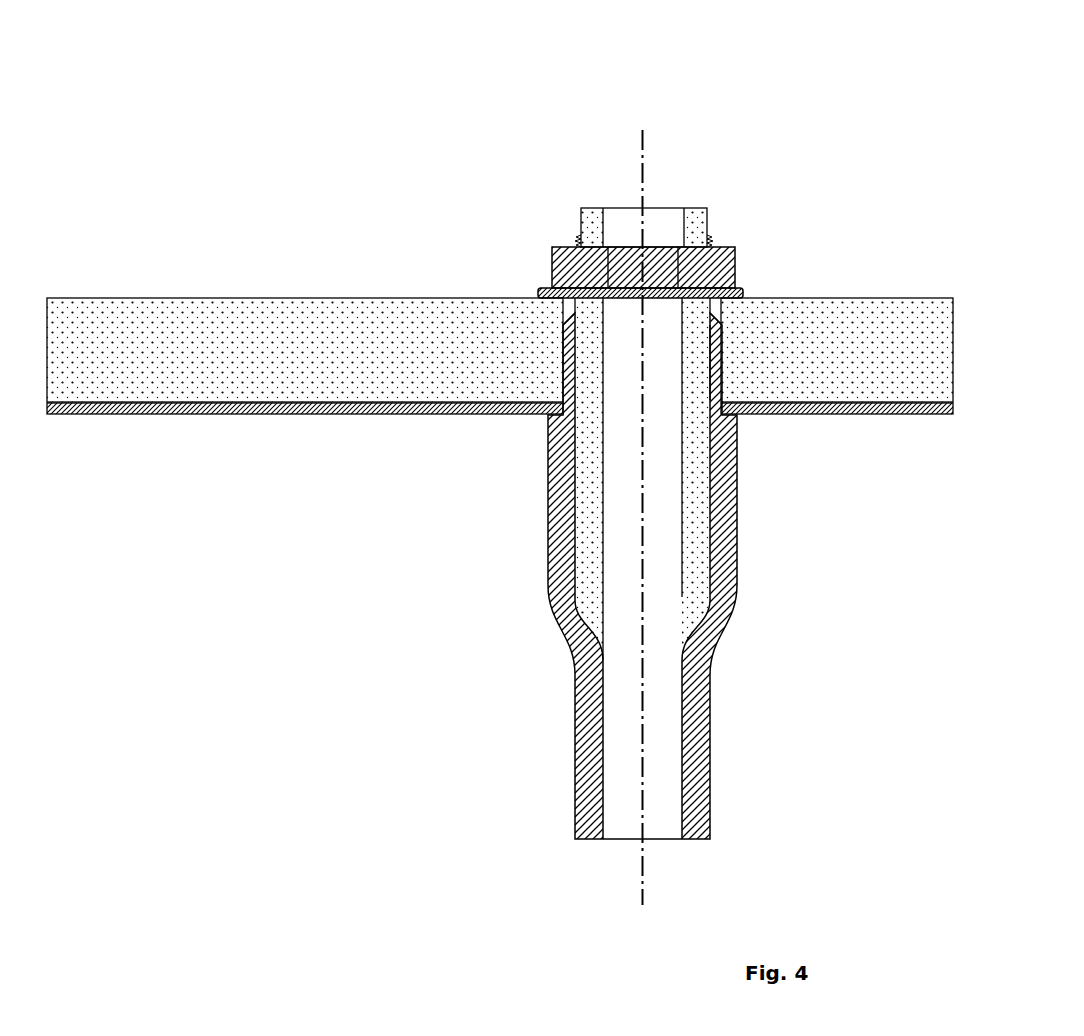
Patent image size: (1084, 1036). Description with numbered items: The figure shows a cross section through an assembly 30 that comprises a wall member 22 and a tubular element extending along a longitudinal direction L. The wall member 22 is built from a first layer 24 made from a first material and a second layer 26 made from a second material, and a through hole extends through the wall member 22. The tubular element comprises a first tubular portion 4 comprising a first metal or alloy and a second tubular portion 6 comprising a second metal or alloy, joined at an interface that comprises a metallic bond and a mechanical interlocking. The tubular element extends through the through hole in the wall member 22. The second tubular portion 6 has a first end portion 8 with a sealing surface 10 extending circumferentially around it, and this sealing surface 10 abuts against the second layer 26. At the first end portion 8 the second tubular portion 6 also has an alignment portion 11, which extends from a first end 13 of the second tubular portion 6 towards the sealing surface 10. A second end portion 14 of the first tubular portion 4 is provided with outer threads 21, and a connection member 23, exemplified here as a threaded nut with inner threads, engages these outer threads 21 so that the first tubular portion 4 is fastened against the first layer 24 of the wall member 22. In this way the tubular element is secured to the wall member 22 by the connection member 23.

The assembly 30 is at (553, 458).
The wall member 22 is at (500, 323).
The first layer 24 is at (500, 338).
The second layer 26 is at (223, 407).
The first end portion 8 is at (757, 375).
The sealing surface 10 is at (556, 407).
The second tubular portion 6 is at (695, 752).
The first tubular portion 4 is at (608, 388).
The second end portion 14 is at (583, 202).
The outer threads 21 is at (574, 243).
The connection member 23 is at (567, 262).
The first end 13 is at (721, 325).
The alignment portion 11 is at (713, 365).
The longitudinal direction L is at (642, 884).